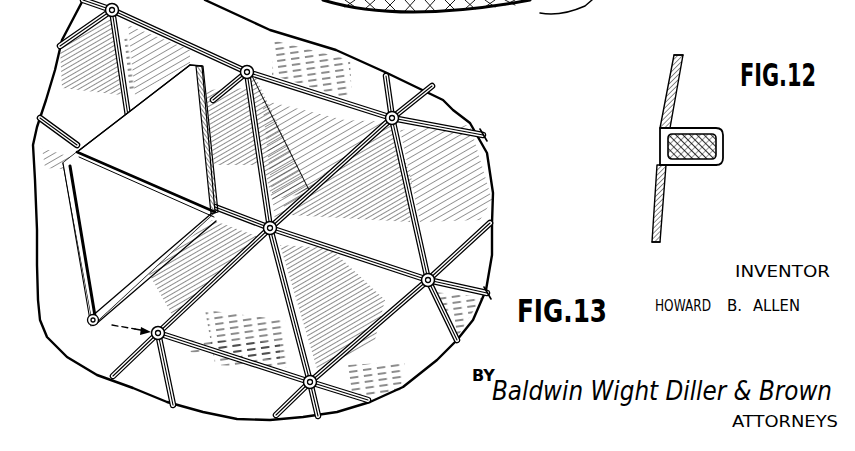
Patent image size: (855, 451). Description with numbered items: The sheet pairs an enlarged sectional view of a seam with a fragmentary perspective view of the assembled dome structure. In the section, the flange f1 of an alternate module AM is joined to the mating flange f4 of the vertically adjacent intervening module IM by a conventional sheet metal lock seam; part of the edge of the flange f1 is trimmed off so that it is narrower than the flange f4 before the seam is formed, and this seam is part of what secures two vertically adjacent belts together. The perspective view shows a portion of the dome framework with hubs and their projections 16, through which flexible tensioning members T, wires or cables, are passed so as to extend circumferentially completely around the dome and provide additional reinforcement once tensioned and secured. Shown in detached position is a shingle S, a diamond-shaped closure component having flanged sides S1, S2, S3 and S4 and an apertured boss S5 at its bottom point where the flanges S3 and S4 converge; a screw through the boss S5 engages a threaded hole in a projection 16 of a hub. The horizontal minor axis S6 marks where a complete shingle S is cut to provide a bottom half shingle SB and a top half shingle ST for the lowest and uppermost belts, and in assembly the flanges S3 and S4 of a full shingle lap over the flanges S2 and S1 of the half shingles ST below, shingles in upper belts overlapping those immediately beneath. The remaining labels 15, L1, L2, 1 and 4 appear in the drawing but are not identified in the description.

In FIG. 13, the shingle S is at (99, 246).
In FIG. 13, the flanged side S1 is at (104, 128).
In FIG. 13, the flanged side S2 is at (222, 190).
In FIG. 13, the flanged side S3 is at (73, 227).
In FIG. 13, the flanged side S4 is at (214, 264).
In FIG. 13, the apertured boss S5 is at (102, 285).
In FIG. 13, the horizontal minor axis S6 is at (158, 193).
In FIG. 13, the bottom half shingle SB is at (83, 313).
In FIG. 13, the top half shingle ST is at (193, 63).
In FIG. 13, the hub connector 15 is at (433, 270).
In FIG. 13, the projection 16 is at (400, 112).
In FIG. 13, the tensioning member T is at (484, 130).
In FIG. 13, the first layer L1 is at (392, 18).
In FIG. 13, the second layer L2 is at (567, 3).
In FIG. 12, the upper strip member 1 is at (673, 86).
In FIG. 12, the lower strip member 4 is at (652, 199).
In FIG. 12, the mating flange f4 is at (708, 132).
In FIG. 12, the flange f1 is at (702, 164).
In FIG. 12, the alternate module AM is at (702, 43).
In FIG. 12, the intervening module IM is at (643, 237).